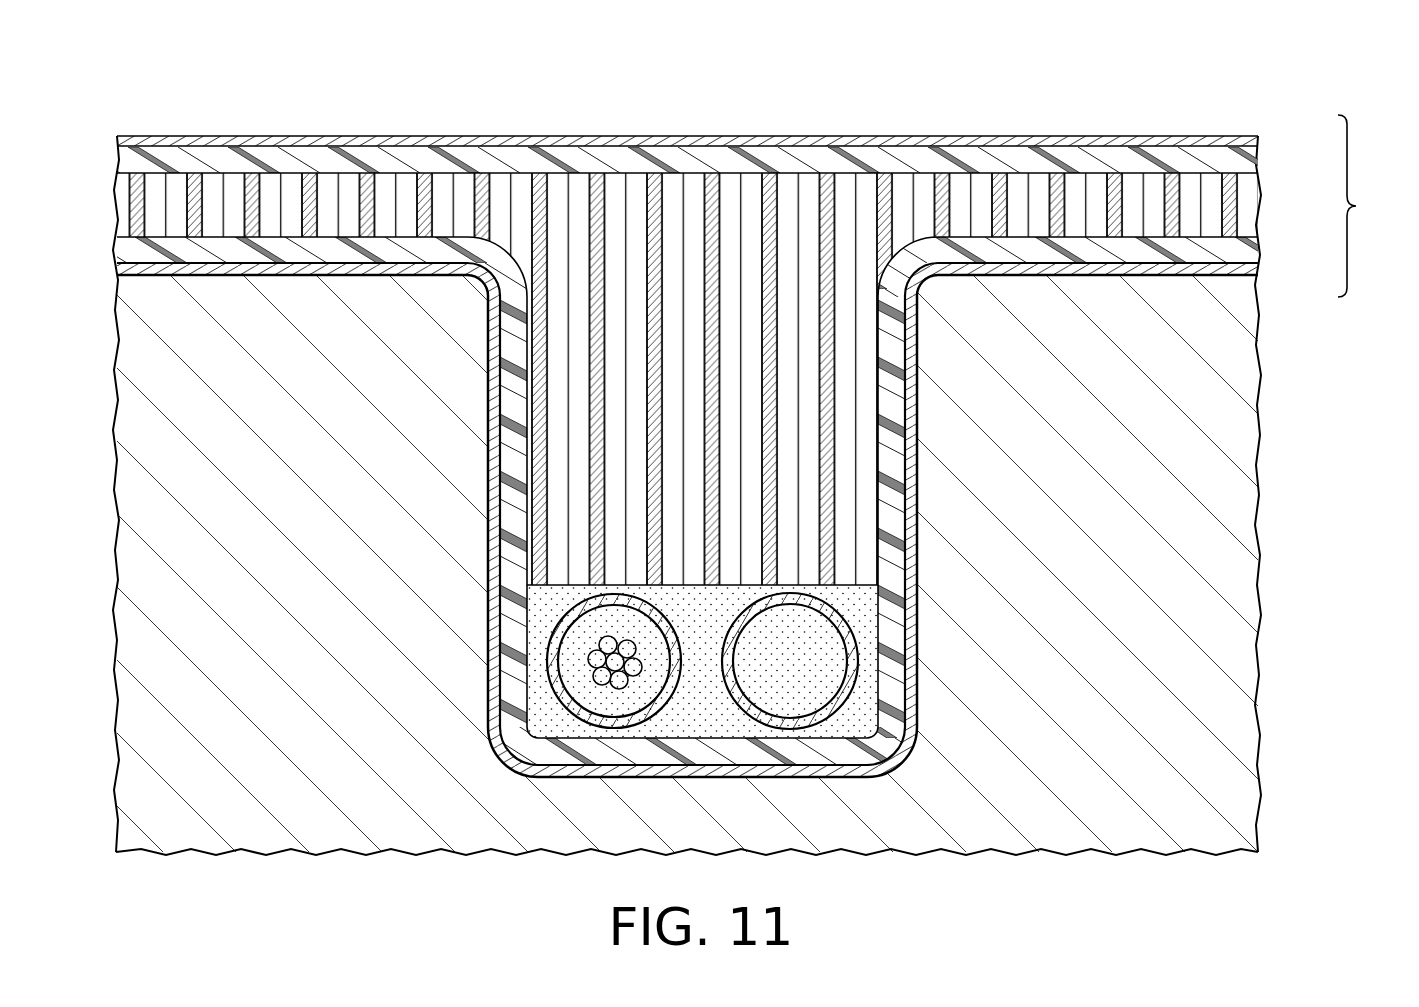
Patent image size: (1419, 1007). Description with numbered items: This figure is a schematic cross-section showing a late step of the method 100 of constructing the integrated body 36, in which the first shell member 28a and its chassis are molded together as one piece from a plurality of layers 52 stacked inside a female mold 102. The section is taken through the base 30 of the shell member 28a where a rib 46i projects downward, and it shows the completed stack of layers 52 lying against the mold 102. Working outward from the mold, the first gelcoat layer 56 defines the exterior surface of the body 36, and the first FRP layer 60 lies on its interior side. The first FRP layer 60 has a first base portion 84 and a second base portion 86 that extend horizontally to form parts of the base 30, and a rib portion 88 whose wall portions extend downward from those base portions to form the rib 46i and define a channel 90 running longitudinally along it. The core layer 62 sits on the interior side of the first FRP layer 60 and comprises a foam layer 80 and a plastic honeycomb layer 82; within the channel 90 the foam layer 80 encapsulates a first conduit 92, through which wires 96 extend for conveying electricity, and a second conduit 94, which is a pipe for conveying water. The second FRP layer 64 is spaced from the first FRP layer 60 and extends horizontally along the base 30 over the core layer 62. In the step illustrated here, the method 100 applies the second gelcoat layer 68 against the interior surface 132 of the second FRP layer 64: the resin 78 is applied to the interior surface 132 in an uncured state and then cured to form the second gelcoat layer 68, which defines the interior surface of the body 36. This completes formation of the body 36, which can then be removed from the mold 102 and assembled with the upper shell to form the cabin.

The integrated body 36 is at (222, 110).
The resin 78 is at (300, 137).
The plastic honeycomb layer 82 is at (636, 188).
The interior surface 132 is at (698, 136).
The first shell member 28a is at (912, 137).
The base 30 is at (1088, 137).
The method 100 is at (1158, 106).
The second gelcoat layer 68 is at (1262, 140).
The second FRP layer 64 is at (1262, 158).
The core layer 62 is at (1245, 200).
The first FRP layer 60 is at (1262, 250).
The first gelcoat layer 56 is at (1262, 270).
The plurality of layers 52 is at (1367, 206).
The first base portion 84 is at (290, 256).
The second base portion 86 is at (1097, 256).
The rib portion 88 is at (510, 505).
The rib 46i is at (492, 570).
The first conduit 92 is at (560, 632).
The wires 96 is at (606, 673).
The channel 90 is at (862, 460).
The foam layer 80 is at (866, 610).
The second conduit 94 is at (850, 668).
The mold 102 is at (137, 746).